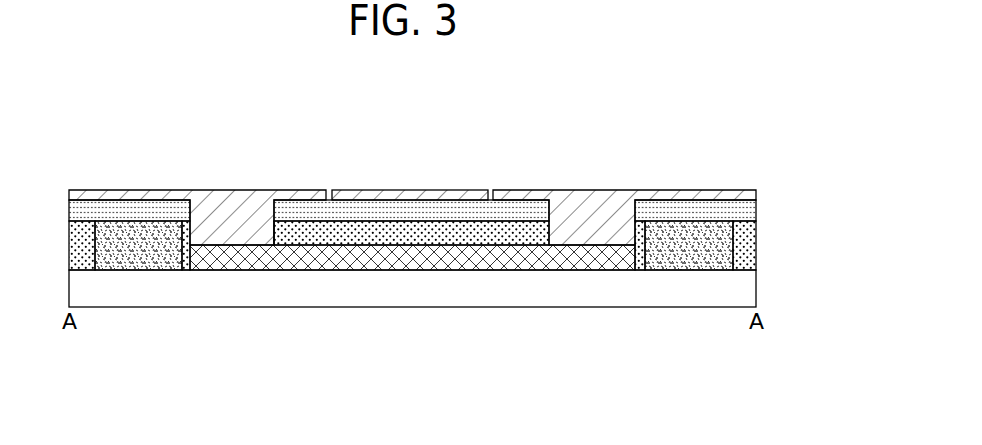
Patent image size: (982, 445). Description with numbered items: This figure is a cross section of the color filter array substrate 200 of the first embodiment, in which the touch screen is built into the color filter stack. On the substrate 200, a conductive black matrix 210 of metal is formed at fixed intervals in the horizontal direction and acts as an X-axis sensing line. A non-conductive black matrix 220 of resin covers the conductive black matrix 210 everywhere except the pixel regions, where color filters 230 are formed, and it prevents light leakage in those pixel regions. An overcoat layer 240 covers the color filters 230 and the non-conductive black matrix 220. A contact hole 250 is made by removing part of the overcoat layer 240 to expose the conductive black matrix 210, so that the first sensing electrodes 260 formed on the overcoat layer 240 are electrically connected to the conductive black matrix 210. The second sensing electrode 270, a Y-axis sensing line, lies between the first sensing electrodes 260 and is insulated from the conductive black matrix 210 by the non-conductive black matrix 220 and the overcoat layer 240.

The color filter array substrate 200 is at (756, 287).
The conductive black matrix 210 is at (528, 262).
The non-conductive black matrix 220 is at (756, 240).
The color filter 230 is at (682, 257).
The overcoat layer 240 is at (756, 210).
The contact hole 250 is at (273, 233).
The first sensing electrode 260 is at (225, 192).
The second sensing electrode 270 is at (417, 192).